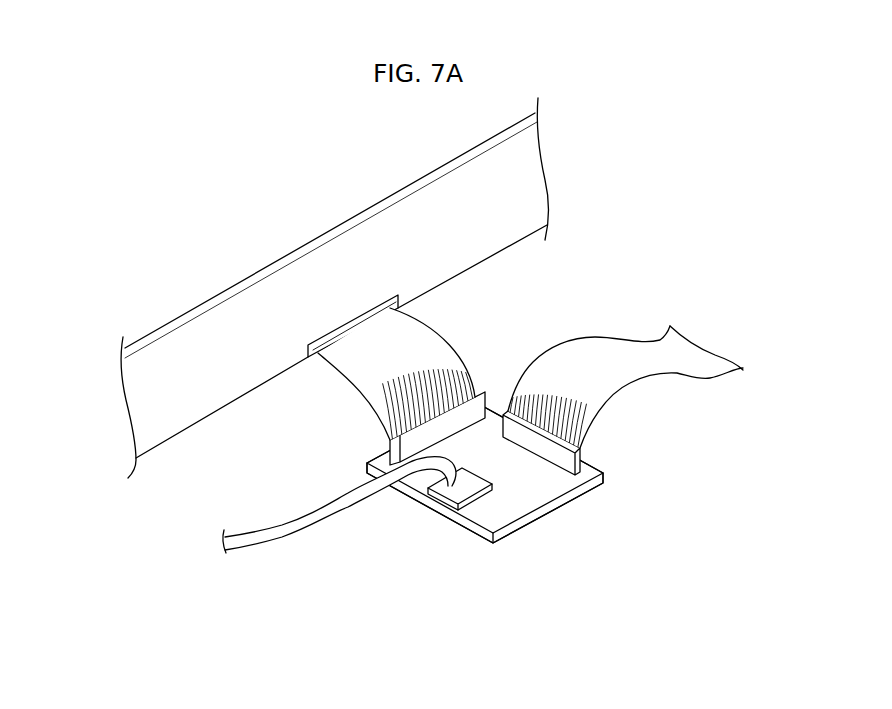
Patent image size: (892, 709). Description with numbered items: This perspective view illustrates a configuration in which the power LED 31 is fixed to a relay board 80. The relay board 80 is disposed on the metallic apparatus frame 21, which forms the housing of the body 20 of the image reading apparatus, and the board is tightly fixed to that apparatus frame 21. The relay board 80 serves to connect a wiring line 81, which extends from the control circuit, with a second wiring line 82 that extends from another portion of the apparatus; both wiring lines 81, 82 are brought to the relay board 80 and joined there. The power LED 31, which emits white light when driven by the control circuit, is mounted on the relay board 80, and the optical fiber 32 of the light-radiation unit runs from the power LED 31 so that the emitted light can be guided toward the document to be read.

The body 20 is at (334, 288).
The apparatus frame 21 is at (275, 413).
The power LED 31 is at (438, 498).
The optical fiber 32 is at (282, 537).
The relay board 80 is at (552, 512).
The wiring line 81 is at (633, 353).
The wiring line 82 is at (437, 348).